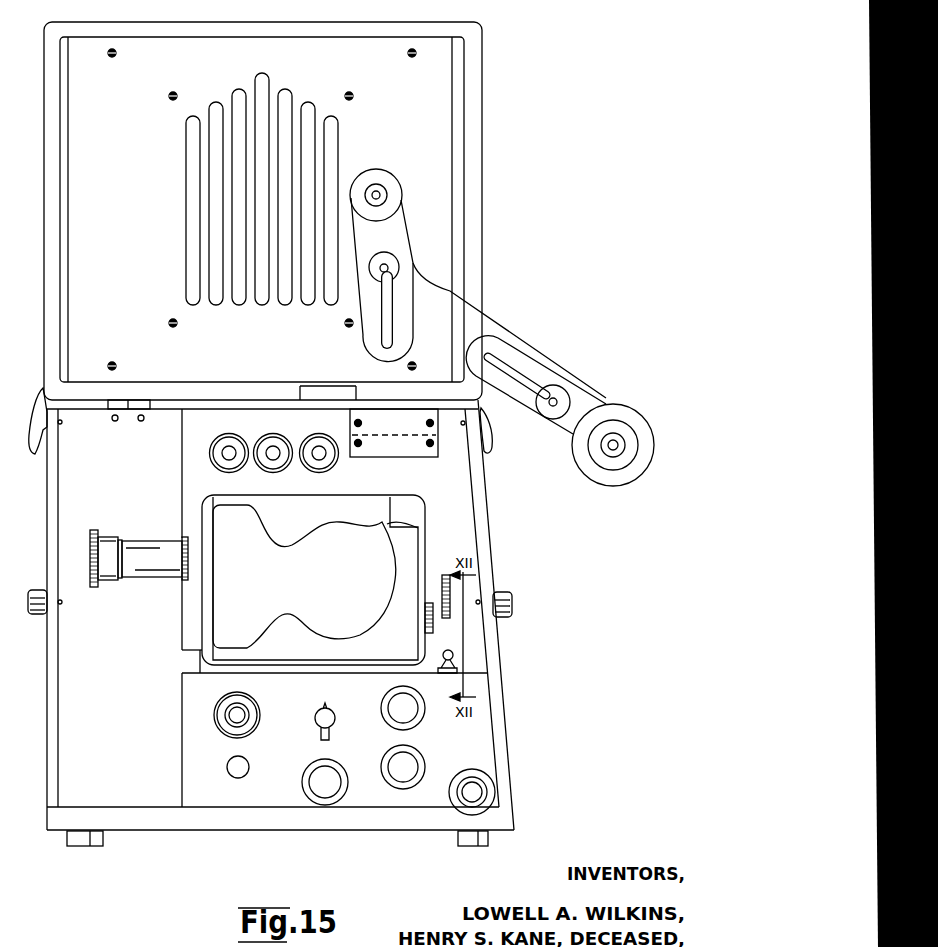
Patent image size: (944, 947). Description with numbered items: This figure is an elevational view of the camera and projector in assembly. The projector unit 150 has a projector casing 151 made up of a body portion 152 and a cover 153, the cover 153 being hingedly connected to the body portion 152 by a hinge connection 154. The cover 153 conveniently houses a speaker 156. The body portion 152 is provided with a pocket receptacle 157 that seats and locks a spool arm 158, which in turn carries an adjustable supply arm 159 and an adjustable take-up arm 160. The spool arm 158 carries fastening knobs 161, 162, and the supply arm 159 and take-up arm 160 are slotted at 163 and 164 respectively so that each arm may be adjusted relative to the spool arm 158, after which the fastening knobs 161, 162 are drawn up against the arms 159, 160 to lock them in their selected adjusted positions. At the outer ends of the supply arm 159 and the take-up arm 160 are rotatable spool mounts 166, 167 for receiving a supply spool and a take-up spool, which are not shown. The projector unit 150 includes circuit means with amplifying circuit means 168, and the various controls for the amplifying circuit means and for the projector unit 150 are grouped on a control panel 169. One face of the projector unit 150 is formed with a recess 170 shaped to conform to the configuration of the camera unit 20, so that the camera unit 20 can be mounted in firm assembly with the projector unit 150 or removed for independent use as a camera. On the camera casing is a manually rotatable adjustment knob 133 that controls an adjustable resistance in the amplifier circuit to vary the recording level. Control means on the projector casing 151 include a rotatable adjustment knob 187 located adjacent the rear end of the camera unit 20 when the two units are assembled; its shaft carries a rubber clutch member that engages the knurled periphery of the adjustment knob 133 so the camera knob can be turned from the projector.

The camera unit 20 is at (177, 617).
The manually rotatable adjustment knob 133 is at (433, 627).
The projector unit 150 is at (505, 556).
The projector casing 151 is at (485, 510).
The body portion 152 is at (497, 642).
The cover 153 is at (481, 240).
The hinge connection 154 is at (120, 398).
The speaker 156 is at (331, 137).
The pocket receptacle 157 is at (407, 442).
The spool arm 158 is at (367, 370).
The adjustable supply arm 159 is at (393, 224).
The adjustable take-up arm 160 is at (588, 417).
The fastening knob 161 is at (392, 263).
The fastening knob 162 is at (552, 400).
The slot 163 is at (392, 318).
The slot 164 is at (505, 366).
The rotatable spool mount 166 is at (369, 182).
The rotatable spool mount 167 is at (645, 442).
The amplifying circuit means 168 is at (178, 751).
The control panel 169 is at (278, 787).
The recess 170 is at (287, 498).
The rotatable adjustment knob 187 is at (450, 583).